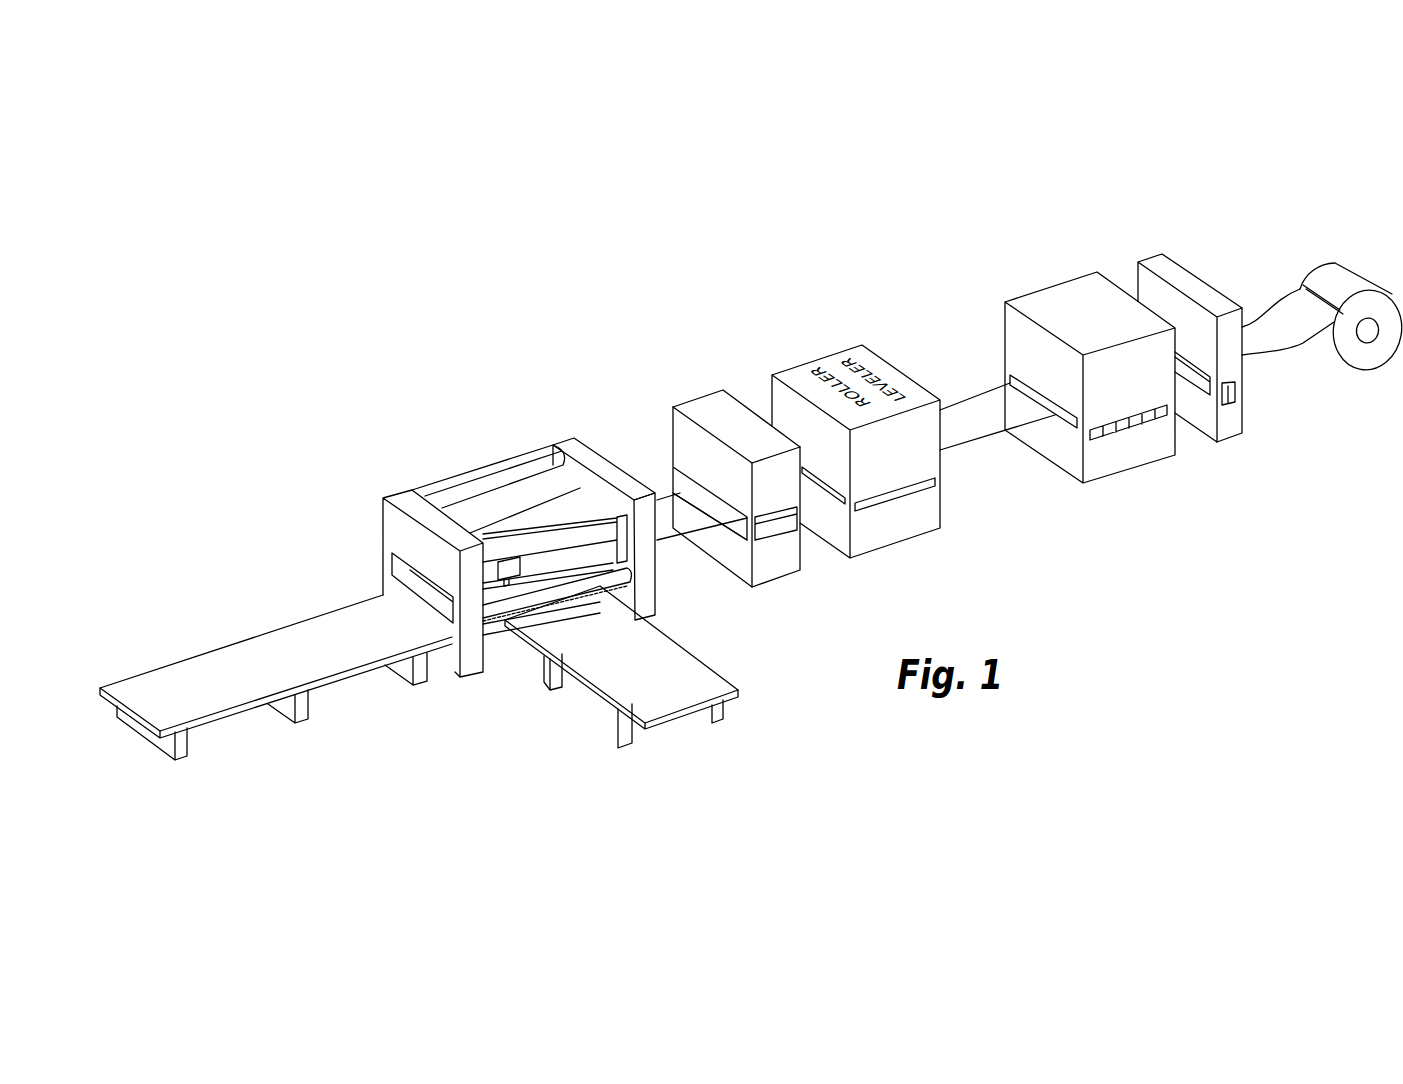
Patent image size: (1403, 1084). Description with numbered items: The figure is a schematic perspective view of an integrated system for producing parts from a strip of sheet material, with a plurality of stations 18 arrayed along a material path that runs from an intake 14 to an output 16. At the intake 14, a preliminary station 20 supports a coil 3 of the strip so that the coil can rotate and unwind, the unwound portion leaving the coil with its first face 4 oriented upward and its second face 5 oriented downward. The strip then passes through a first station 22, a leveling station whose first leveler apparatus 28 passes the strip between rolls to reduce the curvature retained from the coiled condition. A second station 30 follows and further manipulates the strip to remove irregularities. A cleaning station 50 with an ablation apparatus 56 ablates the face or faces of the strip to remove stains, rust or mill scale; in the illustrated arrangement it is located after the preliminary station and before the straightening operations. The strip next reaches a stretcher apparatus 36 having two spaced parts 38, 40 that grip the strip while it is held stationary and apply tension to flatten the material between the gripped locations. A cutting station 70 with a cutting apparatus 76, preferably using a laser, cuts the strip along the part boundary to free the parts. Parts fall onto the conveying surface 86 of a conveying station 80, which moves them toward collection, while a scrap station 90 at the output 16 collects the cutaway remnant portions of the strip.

The coil 3 is at (1318, 336).
The intake 14 is at (1385, 377).
The preliminary station 20 is at (1334, 381).
The first leveler apparatus 28 is at (1149, 375).
The first station 22 is at (1228, 456).
The second station 30 is at (1120, 496).
The first face 4 is at (995, 422).
The second face 5 is at (962, 448).
The stations 18 is at (746, 469).
The ablation apparatus 56 is at (718, 395).
The cleaning station 50 is at (801, 589).
The stretcher apparatus 36 is at (509, 571).
The cutting station 70 is at (448, 459).
The cutting apparatus 76 is at (528, 457).
The part of stretcher apparatus 38 is at (657, 597).
The part of stretcher apparatus 40 is at (477, 675).
The output 16 is at (179, 648).
The scrap station 90 is at (276, 691).
The conveying station 80 is at (669, 679).
The conveying surface 86 is at (707, 678).